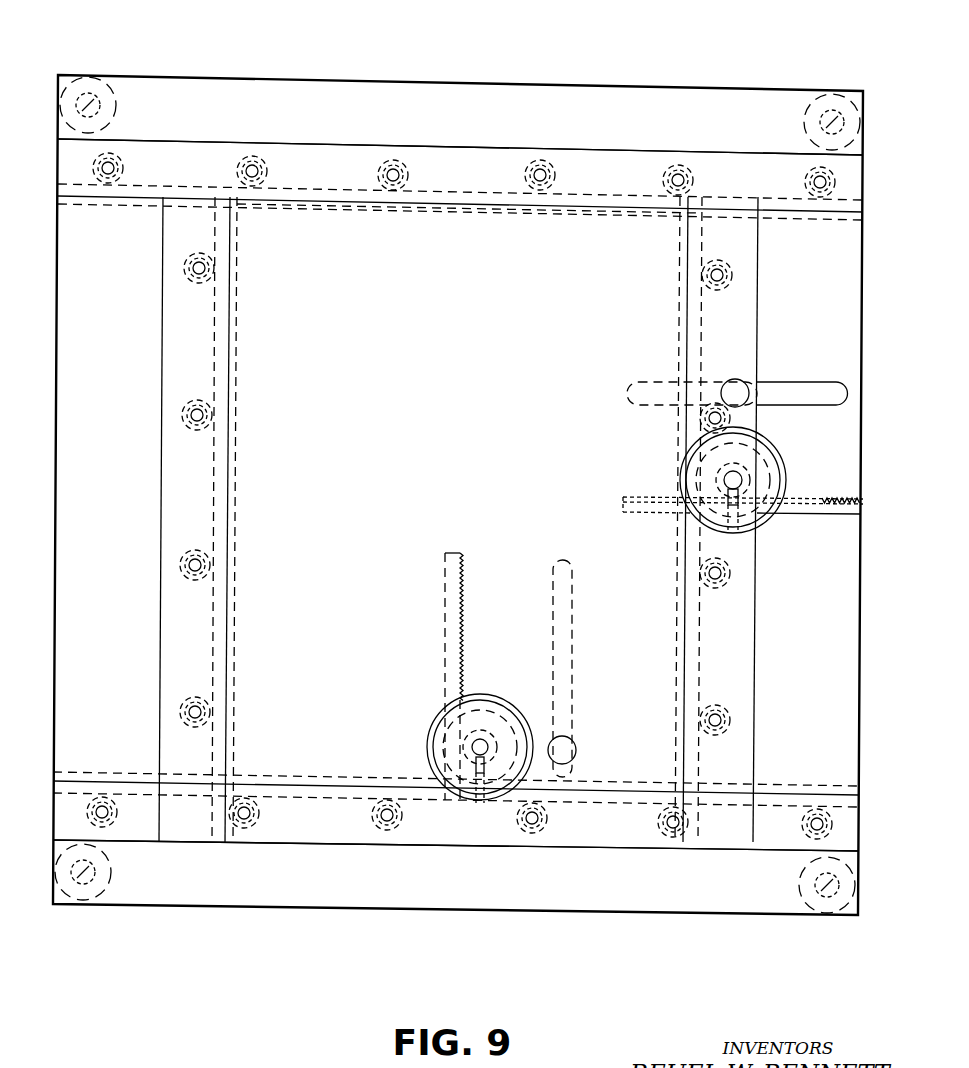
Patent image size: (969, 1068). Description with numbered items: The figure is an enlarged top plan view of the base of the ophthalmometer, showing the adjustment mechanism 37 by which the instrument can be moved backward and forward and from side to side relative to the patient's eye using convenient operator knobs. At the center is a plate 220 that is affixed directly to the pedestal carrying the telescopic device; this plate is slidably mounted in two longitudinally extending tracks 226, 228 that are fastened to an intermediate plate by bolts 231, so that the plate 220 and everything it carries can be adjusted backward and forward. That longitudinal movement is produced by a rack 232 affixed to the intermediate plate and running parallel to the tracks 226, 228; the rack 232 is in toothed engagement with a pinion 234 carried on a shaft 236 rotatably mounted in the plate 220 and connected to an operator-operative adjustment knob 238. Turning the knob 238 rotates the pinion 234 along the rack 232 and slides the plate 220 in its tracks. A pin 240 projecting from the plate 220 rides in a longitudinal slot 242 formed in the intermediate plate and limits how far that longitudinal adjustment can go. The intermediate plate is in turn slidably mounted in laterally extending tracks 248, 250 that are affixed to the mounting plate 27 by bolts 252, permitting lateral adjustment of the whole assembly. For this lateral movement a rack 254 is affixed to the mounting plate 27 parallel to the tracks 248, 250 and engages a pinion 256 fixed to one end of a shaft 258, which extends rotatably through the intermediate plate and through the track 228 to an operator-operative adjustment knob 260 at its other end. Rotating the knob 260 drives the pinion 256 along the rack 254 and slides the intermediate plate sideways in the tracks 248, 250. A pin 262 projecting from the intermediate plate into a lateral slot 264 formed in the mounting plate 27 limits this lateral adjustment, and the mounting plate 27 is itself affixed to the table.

The adjustment mechanism 37 is at (522, 80).
The mounting plate 27 is at (85, 435).
The plate 220 is at (436, 438).
The track 226 is at (170, 598).
The track 228 is at (744, 668).
The bolts 231 is at (185, 412).
The rack 232 is at (448, 593).
The pinion 234 is at (476, 730).
The shaft 236 is at (472, 747).
The adjustment knob 238 is at (434, 718).
The pin 240 is at (576, 748).
The longitudinal slot 242 is at (552, 612).
The track 248 is at (452, 842).
The track 250 is at (452, 160).
The bolts 252 is at (380, 166).
The rack 254 is at (790, 514).
The pinion 256 is at (745, 475).
The shaft 258 is at (724, 480).
The adjustment knob 260 is at (788, 485).
The pin 262 is at (745, 384).
The lateral slot 264 is at (665, 380).